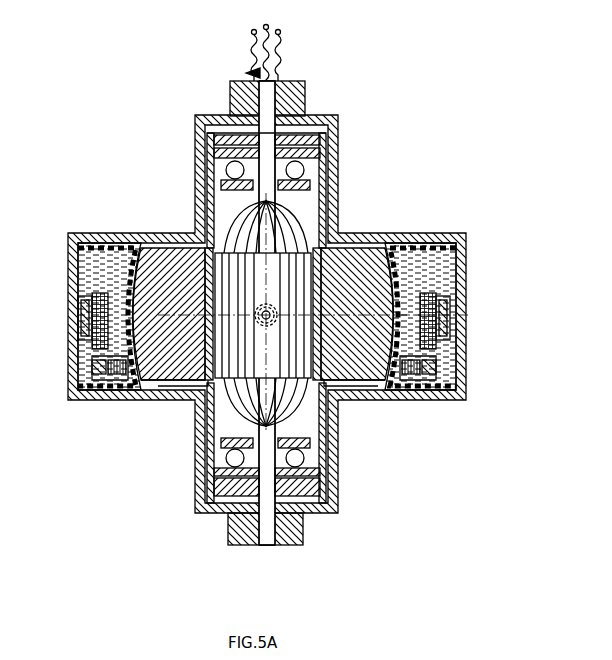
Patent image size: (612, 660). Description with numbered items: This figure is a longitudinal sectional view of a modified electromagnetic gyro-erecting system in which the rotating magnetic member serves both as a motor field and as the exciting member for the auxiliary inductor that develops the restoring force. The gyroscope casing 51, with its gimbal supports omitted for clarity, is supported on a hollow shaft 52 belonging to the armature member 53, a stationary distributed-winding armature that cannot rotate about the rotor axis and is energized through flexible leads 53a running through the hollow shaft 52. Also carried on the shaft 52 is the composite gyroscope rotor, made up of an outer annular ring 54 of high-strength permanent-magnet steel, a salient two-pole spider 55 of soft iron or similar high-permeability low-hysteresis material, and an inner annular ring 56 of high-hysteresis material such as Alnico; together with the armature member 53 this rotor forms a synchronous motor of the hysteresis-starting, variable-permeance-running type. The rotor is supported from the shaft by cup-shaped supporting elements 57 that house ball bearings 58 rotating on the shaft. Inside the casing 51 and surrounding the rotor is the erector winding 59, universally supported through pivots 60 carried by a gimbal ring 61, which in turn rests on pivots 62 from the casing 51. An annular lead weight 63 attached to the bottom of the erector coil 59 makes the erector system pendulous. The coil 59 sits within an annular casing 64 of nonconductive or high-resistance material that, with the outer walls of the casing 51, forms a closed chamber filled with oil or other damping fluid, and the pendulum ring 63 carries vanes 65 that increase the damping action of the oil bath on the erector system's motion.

The gyroscope casing 51 is at (330, 186).
The hollow shaft 52 is at (260, 86).
The armature member 53 is at (240, 212).
The flexible leads 53a is at (238, 64).
The outer annular ring 54 is at (150, 378).
The salient two-pole spider 55 is at (184, 380).
The inner annular ring 56 is at (188, 235).
The cup-shaped supporting elements 57 is at (199, 160).
The ball bearings 58 is at (294, 172).
The erector winding 59 is at (92, 285).
The pivots 60 is at (254, 302).
The gimbal ring 61 is at (73, 314).
The pivots 62 is at (72, 310).
The annular lead weight 63 is at (90, 362).
The annular casing 64 is at (97, 235).
The vanes 65 is at (92, 372).